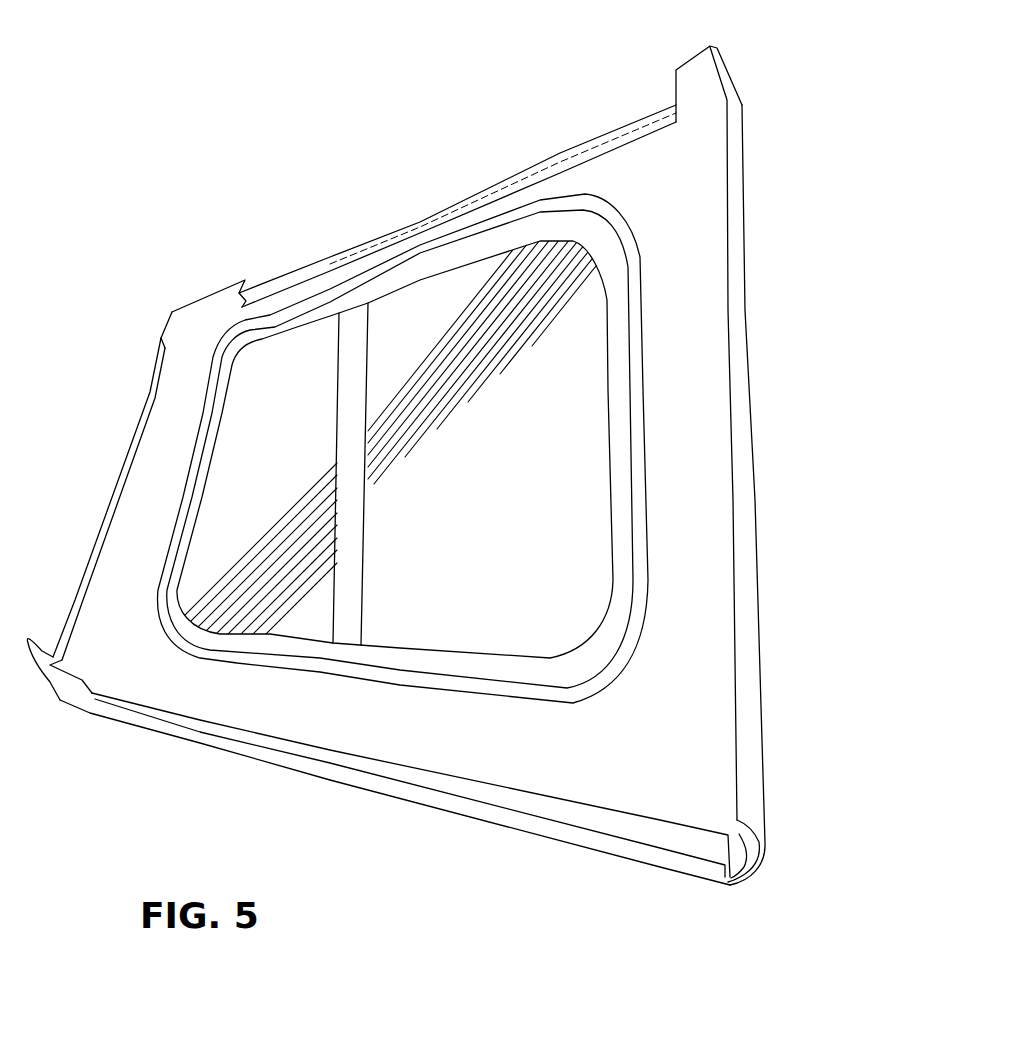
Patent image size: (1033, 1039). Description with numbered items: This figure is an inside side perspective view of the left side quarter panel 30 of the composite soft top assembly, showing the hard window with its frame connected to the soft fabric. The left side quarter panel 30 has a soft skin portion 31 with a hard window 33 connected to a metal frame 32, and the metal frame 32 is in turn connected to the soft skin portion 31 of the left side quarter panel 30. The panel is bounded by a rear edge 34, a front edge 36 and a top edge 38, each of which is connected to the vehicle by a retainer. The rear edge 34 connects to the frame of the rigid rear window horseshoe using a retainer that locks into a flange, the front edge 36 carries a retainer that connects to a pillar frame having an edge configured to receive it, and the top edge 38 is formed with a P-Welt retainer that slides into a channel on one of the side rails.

The left side quarter panel 30 is at (266, 150).
The soft skin portion 31 is at (713, 305).
The metal frame 32 is at (627, 333).
The hard window 33 is at (572, 370).
The rear edge 34 is at (125, 467).
The front edge 36 is at (743, 478).
The top edge 38 is at (523, 183).